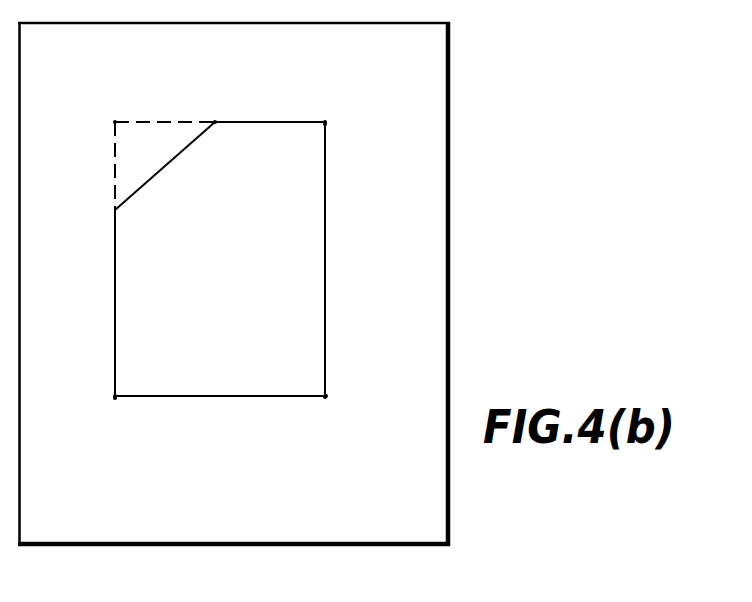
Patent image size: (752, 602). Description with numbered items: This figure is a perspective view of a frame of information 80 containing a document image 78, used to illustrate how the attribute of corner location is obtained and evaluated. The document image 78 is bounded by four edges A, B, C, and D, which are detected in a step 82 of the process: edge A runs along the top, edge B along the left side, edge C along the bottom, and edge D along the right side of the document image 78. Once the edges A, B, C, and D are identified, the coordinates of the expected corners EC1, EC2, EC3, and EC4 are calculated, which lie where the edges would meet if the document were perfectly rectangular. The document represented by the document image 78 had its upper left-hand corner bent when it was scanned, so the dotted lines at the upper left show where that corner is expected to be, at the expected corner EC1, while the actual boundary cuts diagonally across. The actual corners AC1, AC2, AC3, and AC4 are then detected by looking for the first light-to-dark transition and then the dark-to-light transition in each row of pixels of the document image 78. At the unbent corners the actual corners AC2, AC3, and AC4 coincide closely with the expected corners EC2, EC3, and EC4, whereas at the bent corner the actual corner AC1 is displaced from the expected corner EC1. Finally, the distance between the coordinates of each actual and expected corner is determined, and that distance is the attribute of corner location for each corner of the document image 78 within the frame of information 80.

The document image 78 is at (230, 300).
The frame of information 80 is at (398, 362).
The step of detecting edges 82 is at (167, 163).
The expected corner EC1 is at (114, 121).
The actual corner AC1 is at (214, 121).
The edge A is at (280, 119).
The expected corner EC4 is at (326, 121).
The actual corner AC4 is at (327, 123).
The edge D is at (326, 240).
The edge B is at (114, 280).
The edge C is at (217, 397).
The actual corner AC2 is at (114, 396).
The expected corner EC2 is at (115, 397).
The actual corner AC3 is at (326, 397).
The expected corner EC3 is at (328, 397).